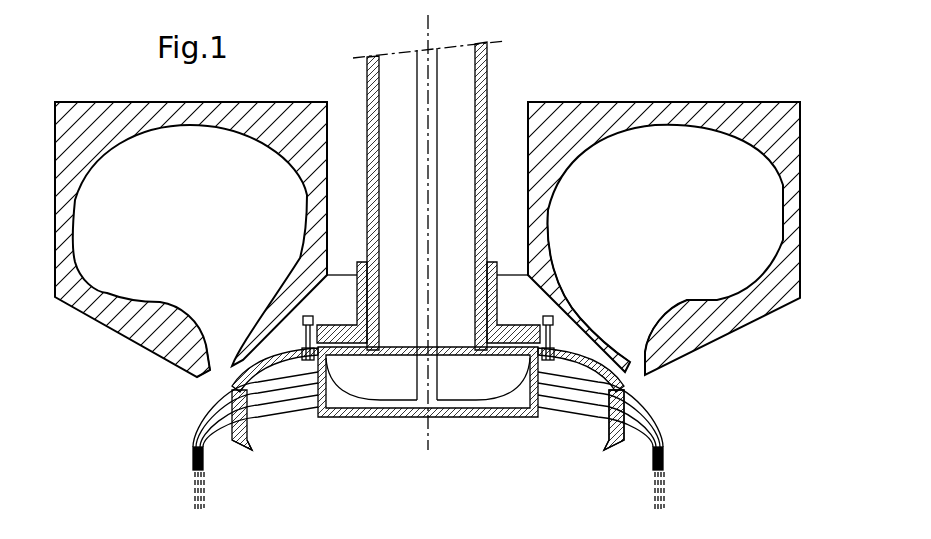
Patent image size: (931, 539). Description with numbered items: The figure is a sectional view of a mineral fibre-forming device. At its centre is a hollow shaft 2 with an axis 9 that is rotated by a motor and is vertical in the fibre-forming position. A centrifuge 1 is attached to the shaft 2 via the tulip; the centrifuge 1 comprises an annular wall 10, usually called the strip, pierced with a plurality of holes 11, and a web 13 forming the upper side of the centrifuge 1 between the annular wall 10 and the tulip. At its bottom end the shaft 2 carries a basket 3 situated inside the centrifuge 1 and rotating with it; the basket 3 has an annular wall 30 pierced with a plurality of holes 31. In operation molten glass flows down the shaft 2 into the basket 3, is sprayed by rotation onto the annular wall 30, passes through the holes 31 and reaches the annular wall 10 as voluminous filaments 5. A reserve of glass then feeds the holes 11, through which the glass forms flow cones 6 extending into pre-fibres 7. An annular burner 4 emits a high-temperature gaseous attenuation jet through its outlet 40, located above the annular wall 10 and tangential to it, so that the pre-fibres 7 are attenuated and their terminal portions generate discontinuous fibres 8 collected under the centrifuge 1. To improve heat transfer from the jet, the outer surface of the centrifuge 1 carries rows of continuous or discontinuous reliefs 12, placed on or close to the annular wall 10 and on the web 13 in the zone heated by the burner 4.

The centrifuge 1 is at (607, 448).
The shaft 2 is at (488, 78).
The basket 3 is at (456, 418).
The annular burner 4 is at (714, 140).
The voluminous filaments 5 is at (303, 410).
The flow cones 6 is at (193, 447).
The pre-fibres 7 is at (197, 420).
The discontinuous fibres 8 is at (195, 488).
The axis 9 is at (428, 36).
The annular wall 10 is at (255, 412).
The holes 11 is at (232, 445).
The reliefs 12 is at (222, 348).
The web 13 is at (257, 330).
The annular wall of the basket 30 is at (568, 355).
The holes of the basket 31 is at (549, 417).
The outlet 40 is at (665, 345).